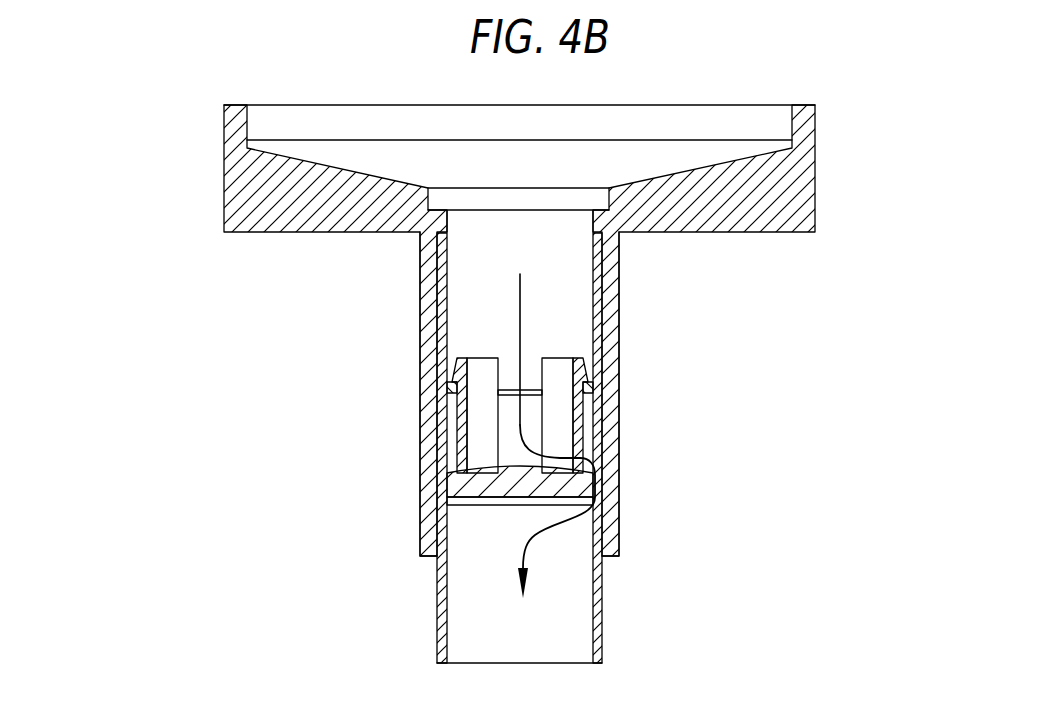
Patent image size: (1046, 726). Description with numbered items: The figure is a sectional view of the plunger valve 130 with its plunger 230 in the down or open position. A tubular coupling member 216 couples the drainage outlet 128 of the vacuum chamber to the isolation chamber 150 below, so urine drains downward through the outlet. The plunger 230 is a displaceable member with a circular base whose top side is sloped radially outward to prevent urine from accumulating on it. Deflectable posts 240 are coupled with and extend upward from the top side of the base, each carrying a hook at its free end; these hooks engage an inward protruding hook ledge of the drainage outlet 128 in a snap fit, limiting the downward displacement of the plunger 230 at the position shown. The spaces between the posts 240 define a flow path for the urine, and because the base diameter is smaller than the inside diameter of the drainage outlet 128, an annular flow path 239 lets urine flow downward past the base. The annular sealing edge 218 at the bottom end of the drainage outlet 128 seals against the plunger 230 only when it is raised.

The plunger valve 130 is at (355, 300).
The tubular coupling member 216 is at (610, 442).
The isolation chamber 150 is at (602, 610).
The drainage outlet 128 is at (562, 292).
The annular sealing edge 218 is at (592, 398).
The deflectable posts 240 is at (483, 407).
The plunger 230 is at (472, 483).
The annular flow path 239 is at (600, 508).